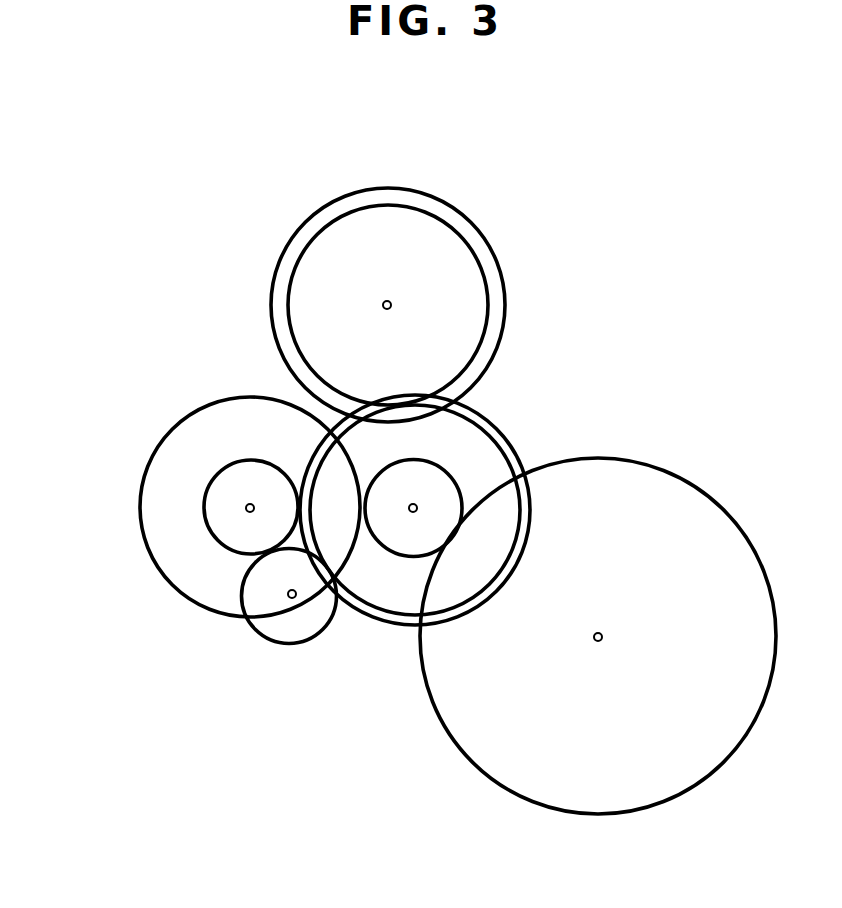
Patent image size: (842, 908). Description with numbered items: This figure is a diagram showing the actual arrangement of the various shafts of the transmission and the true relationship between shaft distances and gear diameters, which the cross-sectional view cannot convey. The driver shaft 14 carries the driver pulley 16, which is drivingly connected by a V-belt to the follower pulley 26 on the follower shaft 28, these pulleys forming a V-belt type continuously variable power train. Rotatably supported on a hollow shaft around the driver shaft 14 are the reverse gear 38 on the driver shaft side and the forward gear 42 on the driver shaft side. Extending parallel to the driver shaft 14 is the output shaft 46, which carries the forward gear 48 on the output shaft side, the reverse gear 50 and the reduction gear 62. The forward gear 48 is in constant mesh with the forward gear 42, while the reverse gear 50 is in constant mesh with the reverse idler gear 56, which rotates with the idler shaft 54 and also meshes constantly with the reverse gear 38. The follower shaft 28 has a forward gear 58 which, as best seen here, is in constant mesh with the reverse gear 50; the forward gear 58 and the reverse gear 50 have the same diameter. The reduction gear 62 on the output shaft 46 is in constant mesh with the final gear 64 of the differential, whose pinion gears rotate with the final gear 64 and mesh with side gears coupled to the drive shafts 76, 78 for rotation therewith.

The driver shaft 14 is at (248, 504).
The driver pulley 16 is at (240, 394).
The follower pulley 26 is at (293, 236).
The follower shaft 28 is at (391, 303).
The reverse gear on the driver shaft side 38 is at (161, 499).
The forward gear on the driver shaft side 42 is at (206, 492).
The output shaft 46 is at (413, 512).
The forward gear on the output shaft side 48 is at (470, 411).
The reverse gear 50 is at (495, 438).
The idler shaft 54 is at (289, 591).
The reverse idler gear 56 is at (331, 621).
The forward gear 58 is at (482, 277).
The reduction gear 62 is at (437, 464).
The final gear 64 is at (683, 477).
The drive shaft 76 is at (650, 616).
The drive shaft 78 is at (602, 634).